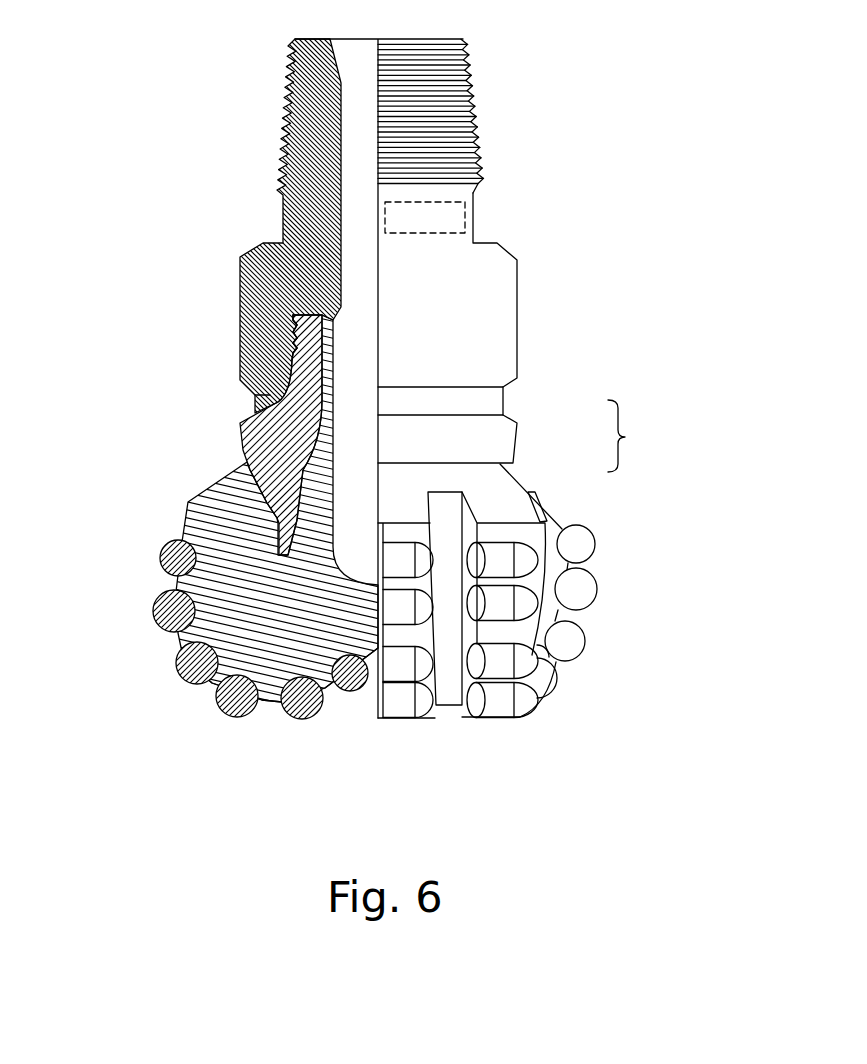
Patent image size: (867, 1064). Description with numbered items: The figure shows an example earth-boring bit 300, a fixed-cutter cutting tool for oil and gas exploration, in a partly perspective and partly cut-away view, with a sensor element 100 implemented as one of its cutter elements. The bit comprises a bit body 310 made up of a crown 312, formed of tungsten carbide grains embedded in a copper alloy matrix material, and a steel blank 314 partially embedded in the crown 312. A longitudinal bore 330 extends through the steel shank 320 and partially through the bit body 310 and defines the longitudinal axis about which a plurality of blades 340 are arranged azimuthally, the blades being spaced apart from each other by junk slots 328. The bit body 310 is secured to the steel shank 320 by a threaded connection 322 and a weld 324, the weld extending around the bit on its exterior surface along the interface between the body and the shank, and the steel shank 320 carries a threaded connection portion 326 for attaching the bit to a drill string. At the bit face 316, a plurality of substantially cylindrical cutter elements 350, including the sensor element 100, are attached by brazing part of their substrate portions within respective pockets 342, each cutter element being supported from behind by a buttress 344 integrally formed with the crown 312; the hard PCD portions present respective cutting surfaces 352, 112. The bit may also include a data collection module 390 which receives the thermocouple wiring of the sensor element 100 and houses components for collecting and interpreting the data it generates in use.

The earth-boring bit 300 is at (568, 60).
The threaded connection portion 326 is at (270, 90).
The longitudinal bore 330 is at (355, 187).
The data collection module 390 is at (466, 212).
The steel shank 320 is at (258, 272).
The threaded connection 322 is at (278, 336).
The weld 324 is at (255, 396).
The steel blank 314 is at (254, 453).
The crown 312 is at (232, 493).
The bit body 310 is at (640, 436).
The bit face 316 is at (185, 645).
The sensor element 100 is at (573, 667).
The junk slots 328 is at (445, 712).
The blades 340 is at (530, 512).
The pocket 342 is at (163, 545).
The cutting surface 112 is at (575, 645).
The cutting surface 352 is at (188, 667).
The cutter element 350 is at (388, 714).
The buttress 344 is at (418, 716).